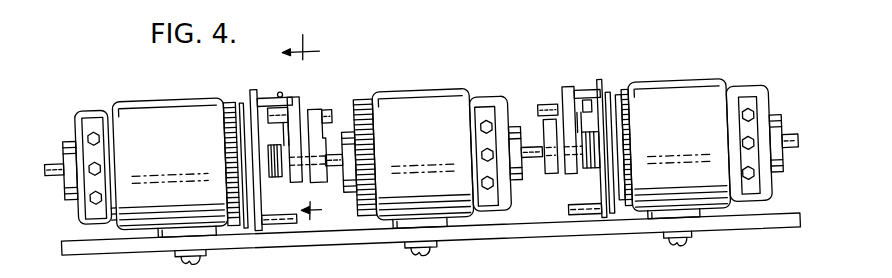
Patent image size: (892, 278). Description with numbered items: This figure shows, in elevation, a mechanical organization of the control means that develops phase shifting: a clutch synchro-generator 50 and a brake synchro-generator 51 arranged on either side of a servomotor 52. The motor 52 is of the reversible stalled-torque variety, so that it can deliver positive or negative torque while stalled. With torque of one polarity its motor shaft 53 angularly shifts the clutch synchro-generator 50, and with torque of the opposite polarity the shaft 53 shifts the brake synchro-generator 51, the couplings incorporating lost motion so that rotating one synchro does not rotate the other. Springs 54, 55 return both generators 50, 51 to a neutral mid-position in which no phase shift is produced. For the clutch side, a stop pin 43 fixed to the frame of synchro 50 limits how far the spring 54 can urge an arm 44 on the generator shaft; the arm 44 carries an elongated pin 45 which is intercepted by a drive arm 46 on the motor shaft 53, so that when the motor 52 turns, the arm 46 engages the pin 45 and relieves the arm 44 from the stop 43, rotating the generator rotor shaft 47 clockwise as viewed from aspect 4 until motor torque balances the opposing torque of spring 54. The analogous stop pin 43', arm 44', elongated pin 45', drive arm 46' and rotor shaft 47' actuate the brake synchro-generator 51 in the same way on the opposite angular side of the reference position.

The aspect 4— 4 is at (304, 123).
The stop pin 43 is at (267, 147).
The stop pin 43' is at (606, 135).
The arm 44 is at (291, 124).
The arm 44' is at (581, 110).
The elongated pin 45 is at (341, 88).
The elongated pin 45' is at (542, 87).
The drive arm 46 is at (339, 132).
The drive arm 46' is at (536, 132).
The generator rotor shaft 47 is at (57, 160).
The generator rotor shaft 47' is at (796, 131).
The clutch synchro-generator 50 is at (190, 98).
The brake synchro-generator 51 is at (693, 97).
The servomotor 52 is at (460, 99).
The motor shaft 53 is at (333, 173).
The spring 54 is at (272, 177).
The spring 55 is at (592, 174).